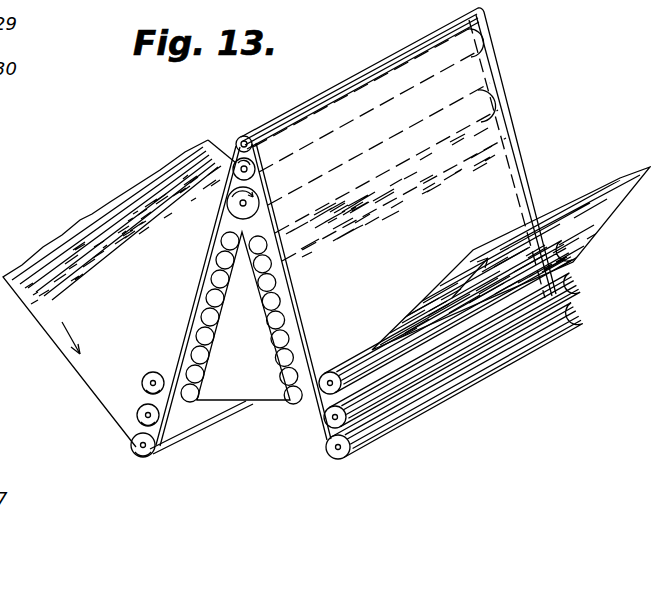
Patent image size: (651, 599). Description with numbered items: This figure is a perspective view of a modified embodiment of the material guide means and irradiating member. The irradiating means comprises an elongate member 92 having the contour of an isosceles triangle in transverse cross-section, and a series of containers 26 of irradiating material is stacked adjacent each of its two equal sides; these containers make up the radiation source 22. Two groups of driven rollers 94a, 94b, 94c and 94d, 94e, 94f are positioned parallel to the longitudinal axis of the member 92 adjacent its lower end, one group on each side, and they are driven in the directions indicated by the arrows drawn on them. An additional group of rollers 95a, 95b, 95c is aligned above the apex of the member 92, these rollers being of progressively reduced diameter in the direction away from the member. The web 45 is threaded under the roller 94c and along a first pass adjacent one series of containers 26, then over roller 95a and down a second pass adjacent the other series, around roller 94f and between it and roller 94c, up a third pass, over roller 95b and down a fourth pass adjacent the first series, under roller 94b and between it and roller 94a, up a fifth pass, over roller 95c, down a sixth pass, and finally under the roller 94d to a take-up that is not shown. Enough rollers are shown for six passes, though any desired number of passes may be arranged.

The web 45 is at (118, 208).
The radiation source 22 is at (258, 403).
The containers 26 is at (300, 403).
The elongate member 92 is at (254, 369).
The driven roller 94a is at (153, 372).
The driven roller 94b is at (141, 406).
The driven roller 94c is at (131, 442).
The driven roller 94d is at (327, 372).
The driven roller 94e is at (327, 428).
The driven roller 94f is at (336, 460).
The roller 95a is at (230, 205).
The roller 95b is at (236, 169).
The roller 95c is at (240, 137).